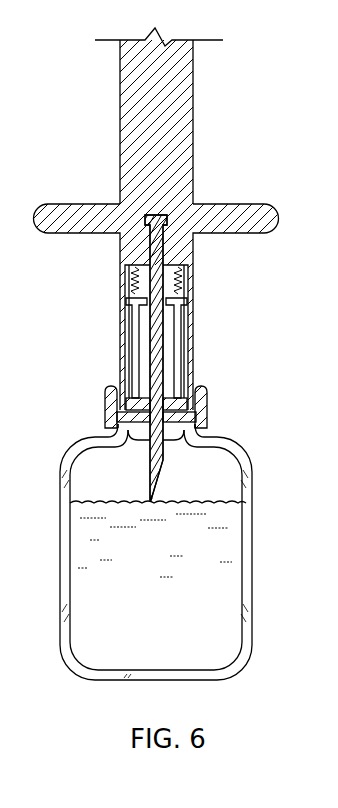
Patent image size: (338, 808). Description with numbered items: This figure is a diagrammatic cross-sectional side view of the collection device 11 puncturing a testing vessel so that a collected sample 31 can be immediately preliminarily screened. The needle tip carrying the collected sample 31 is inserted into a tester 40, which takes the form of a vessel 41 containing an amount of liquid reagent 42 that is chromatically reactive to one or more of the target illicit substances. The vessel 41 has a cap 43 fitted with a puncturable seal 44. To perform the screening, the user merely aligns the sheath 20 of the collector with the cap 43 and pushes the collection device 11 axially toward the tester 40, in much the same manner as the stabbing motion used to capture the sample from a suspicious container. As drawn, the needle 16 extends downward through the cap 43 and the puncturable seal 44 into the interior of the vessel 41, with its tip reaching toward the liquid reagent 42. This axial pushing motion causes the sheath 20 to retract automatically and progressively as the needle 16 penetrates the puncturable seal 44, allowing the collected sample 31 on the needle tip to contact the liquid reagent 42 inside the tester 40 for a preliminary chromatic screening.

The injector device 11 is at (40, 131).
The needle 16 is at (160, 345).
The sheath 20 is at (129, 331).
The cap 43 is at (106, 392).
The vessel 41 is at (78, 440).
The puncturable seal 44 is at (128, 438).
The collected sample 31 is at (163, 452).
The liquid reagent 42 is at (172, 617).
The tester 40 is at (282, 426).